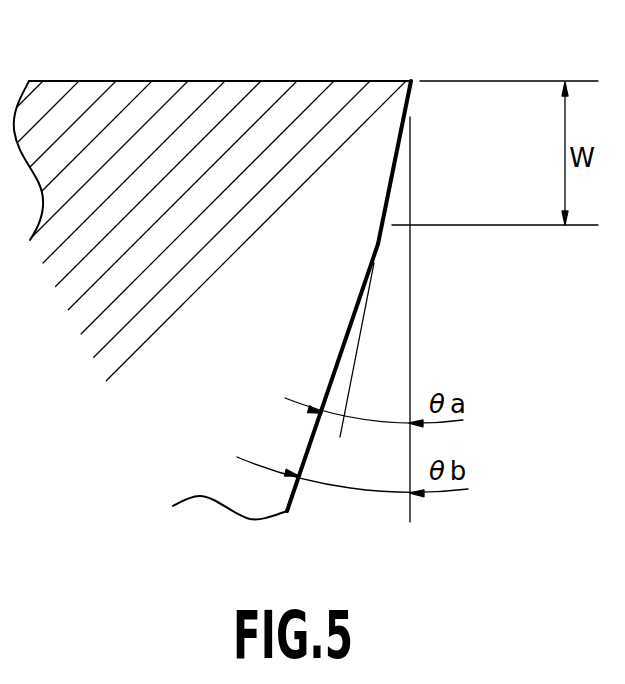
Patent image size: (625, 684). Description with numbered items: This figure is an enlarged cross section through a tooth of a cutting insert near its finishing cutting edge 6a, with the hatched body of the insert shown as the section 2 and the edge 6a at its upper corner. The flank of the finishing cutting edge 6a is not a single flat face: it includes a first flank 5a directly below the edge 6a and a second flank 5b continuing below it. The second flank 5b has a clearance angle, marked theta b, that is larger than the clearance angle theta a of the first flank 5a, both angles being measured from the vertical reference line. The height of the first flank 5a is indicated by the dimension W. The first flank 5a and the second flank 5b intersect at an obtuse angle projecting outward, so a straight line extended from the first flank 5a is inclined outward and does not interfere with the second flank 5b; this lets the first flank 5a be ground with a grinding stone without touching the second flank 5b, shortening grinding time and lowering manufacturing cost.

The workpiece / base member 2 is at (192, 81).
The finishing cutting edge 6a is at (411, 80).
The first flank 5a is at (398, 157).
The second flank 5b is at (357, 310).